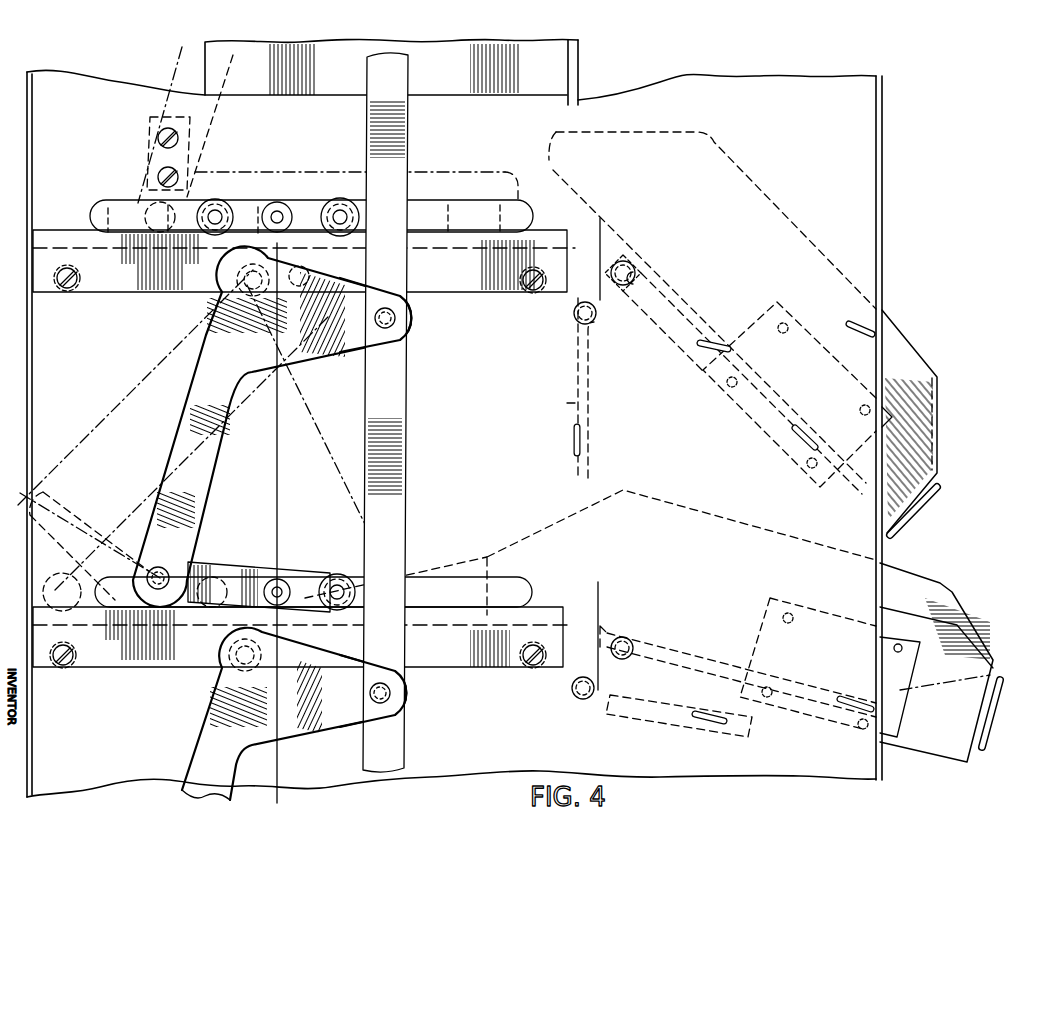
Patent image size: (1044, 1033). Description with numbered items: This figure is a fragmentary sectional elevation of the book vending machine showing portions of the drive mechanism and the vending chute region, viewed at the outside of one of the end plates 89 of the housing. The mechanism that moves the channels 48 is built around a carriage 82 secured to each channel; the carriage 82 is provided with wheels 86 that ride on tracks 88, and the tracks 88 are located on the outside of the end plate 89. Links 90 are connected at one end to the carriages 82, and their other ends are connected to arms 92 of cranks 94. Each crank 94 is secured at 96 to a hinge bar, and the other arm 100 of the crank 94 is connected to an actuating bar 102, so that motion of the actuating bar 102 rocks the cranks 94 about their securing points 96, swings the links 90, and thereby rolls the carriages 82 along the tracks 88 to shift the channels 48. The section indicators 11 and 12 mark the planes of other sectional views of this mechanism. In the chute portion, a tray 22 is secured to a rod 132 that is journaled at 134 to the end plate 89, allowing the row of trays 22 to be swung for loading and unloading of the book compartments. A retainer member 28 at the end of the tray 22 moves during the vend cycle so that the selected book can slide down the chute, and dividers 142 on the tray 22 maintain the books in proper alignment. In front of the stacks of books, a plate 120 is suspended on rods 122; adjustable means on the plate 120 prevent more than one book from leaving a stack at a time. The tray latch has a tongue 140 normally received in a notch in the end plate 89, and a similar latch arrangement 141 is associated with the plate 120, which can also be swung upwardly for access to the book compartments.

The section line 11- 11 is at (580, 245).
The section line 12- 12 is at (240, 243).
The tray 22 is at (750, 408).
The retainer member 28 is at (925, 500).
The channel 48 is at (317, 203).
The carriage 82 is at (240, 210).
The wheel 86 is at (352, 184).
The track 88 is at (72, 230).
The end plate 89 is at (92, 358).
The link 90 is at (232, 575).
The arm 92 is at (203, 488).
The crank 94 is at (217, 310).
The crank securing point 96 is at (222, 290).
The arm 100 is at (338, 342).
The actuating bar 102 is at (400, 397).
The plate 120 is at (573, 402).
The rod 122 is at (596, 322).
The rod 132 is at (630, 267).
The journal 134 is at (637, 280).
The tongue 140 is at (802, 440).
The latch arrangement 141 is at (583, 440).
The divider 142 is at (900, 345).